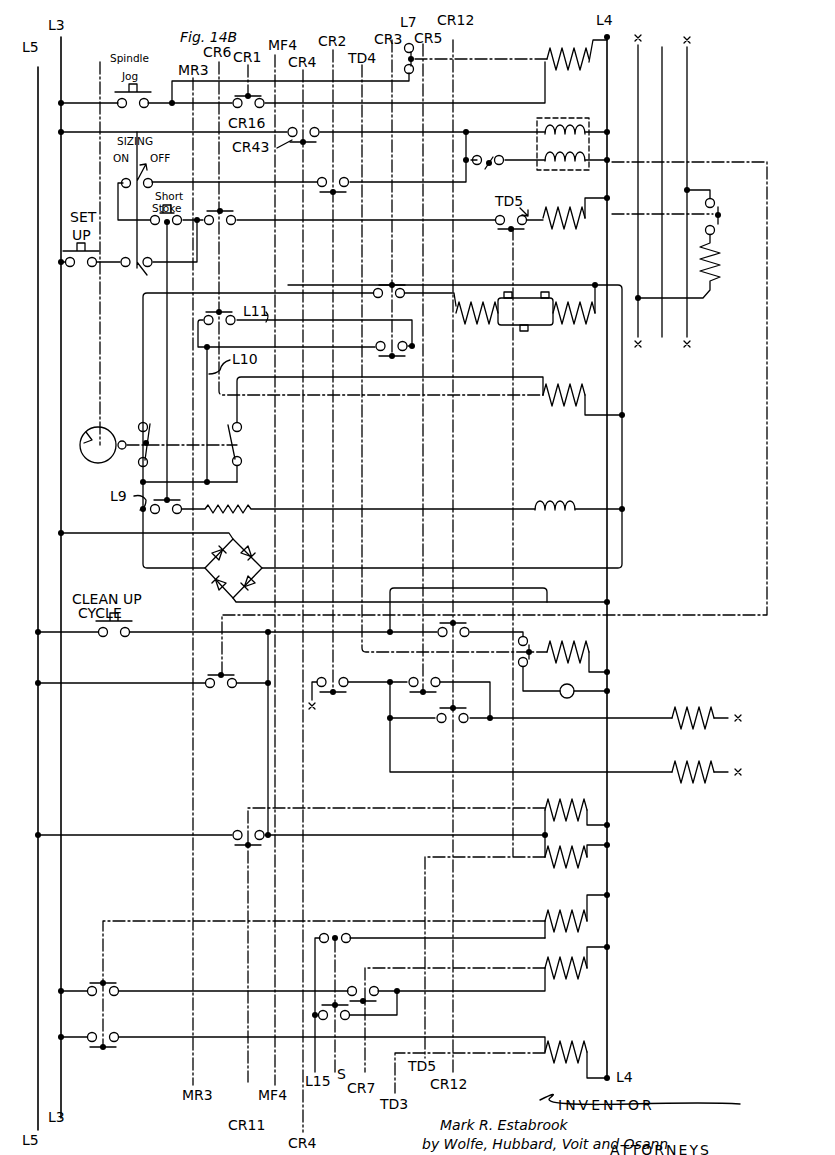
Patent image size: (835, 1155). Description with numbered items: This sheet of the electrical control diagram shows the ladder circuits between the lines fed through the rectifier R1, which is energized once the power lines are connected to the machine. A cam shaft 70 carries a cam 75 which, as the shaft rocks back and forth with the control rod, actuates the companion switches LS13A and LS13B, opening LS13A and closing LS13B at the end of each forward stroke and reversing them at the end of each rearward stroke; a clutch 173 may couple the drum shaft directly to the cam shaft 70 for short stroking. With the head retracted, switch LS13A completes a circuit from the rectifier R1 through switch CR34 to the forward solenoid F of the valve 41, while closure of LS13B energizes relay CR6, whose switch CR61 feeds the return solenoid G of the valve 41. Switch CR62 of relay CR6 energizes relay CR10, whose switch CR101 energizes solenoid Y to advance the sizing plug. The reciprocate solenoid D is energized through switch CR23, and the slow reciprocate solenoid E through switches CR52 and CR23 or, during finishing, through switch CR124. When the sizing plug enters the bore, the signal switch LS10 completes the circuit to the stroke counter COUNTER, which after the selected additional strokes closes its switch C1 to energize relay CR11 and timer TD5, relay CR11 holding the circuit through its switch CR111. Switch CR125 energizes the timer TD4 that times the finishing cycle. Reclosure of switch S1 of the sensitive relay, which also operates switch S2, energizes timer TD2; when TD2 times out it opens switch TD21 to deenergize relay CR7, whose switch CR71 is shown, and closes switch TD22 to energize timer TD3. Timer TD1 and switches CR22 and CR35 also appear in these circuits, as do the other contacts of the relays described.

The cam shaft 70 is at (100, 384).
The cam 75 is at (90, 437).
The valve 41 is at (520, 290).
The clutch 173 is at (560, 504).
The rectifier R1 is at (261, 546).
The timer TD1 is at (582, 44).
The relay CR10 is at (566, 226).
The relay CR6 is at (584, 404).
The timer TD4 is at (586, 641).
The relay CR11 is at (582, 798).
The timer TD5 is at (588, 866).
The timer TD2 is at (568, 902).
The relay CR7 is at (574, 982).
The timer TD3 is at (576, 1040).
The slow reciprocate solenoid E is at (702, 713).
The reciprocate solenoid D is at (694, 786).
The forward solenoid F is at (470, 306).
The return solenoid G is at (568, 328).
The solenoid Y is at (722, 272).
The counter switch C1 is at (223, 692).
The stroke counter COUNTER is at (559, 152).
The signal switch LS10 is at (492, 175).
The companion switch LS13A is at (139, 461).
The companion switch LS13B is at (236, 460).
The relay switch CR22 is at (336, 174).
The relay switch CR62 is at (220, 226).
The relay switch CR101 is at (722, 193).
The relay switch CR34 is at (386, 276).
The relay switch CR35 is at (371, 351).
The relay switch CR61 is at (226, 300).
The relay switch CR125 is at (439, 644).
The relay switch CR23 is at (337, 703).
The relay switch CR52 is at (416, 668).
The relay switch CR124 is at (448, 728).
The relay switch CR111 is at (250, 829).
The sensitive relay switch S1 is at (343, 930).
The sensitive relay switch S2 is at (342, 1012).
The timer switch TD21 is at (111, 981).
The timer switch TD22 is at (111, 1033).
The relay switch CR71 is at (366, 981).